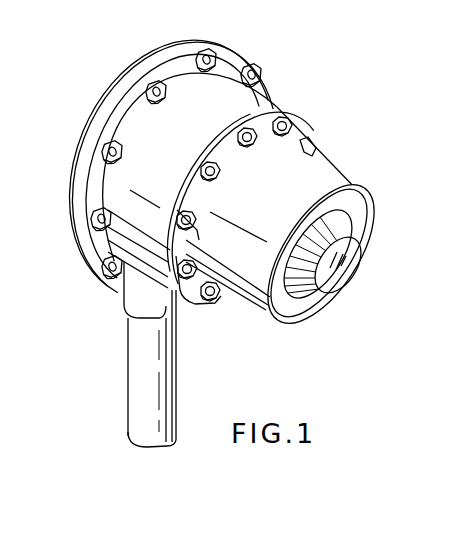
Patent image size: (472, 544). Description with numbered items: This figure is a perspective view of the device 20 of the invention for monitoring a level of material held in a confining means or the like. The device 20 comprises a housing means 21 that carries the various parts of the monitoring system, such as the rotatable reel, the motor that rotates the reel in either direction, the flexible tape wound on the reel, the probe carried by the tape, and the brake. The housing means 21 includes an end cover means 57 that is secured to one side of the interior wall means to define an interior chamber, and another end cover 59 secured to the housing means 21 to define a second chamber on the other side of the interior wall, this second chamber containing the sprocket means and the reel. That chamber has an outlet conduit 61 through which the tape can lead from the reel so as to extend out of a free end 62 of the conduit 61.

The device 20 is at (340, 110).
The housing means 21 is at (276, 106).
The end cover means 57 is at (258, 316).
The end cover 59 is at (107, 101).
The outlet conduit 61 is at (128, 373).
The free end 62 is at (150, 448).